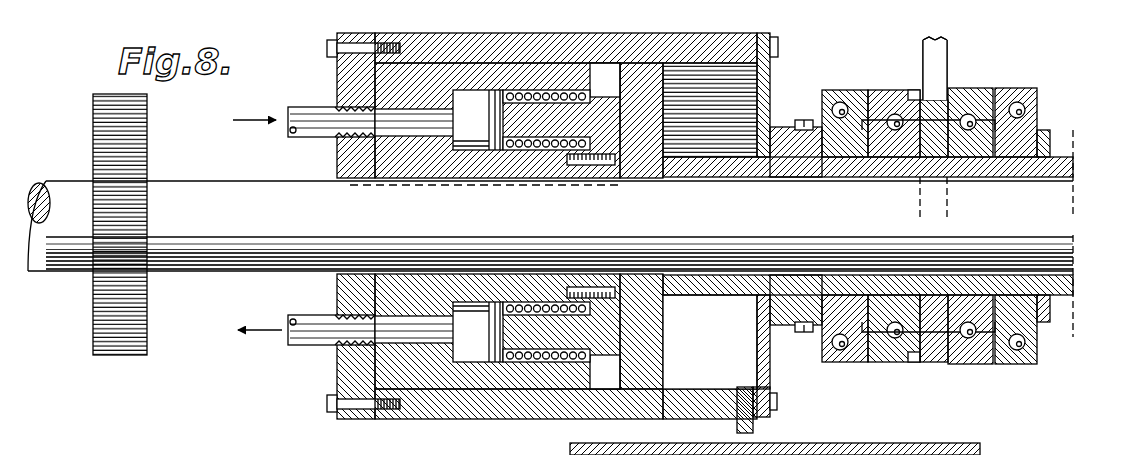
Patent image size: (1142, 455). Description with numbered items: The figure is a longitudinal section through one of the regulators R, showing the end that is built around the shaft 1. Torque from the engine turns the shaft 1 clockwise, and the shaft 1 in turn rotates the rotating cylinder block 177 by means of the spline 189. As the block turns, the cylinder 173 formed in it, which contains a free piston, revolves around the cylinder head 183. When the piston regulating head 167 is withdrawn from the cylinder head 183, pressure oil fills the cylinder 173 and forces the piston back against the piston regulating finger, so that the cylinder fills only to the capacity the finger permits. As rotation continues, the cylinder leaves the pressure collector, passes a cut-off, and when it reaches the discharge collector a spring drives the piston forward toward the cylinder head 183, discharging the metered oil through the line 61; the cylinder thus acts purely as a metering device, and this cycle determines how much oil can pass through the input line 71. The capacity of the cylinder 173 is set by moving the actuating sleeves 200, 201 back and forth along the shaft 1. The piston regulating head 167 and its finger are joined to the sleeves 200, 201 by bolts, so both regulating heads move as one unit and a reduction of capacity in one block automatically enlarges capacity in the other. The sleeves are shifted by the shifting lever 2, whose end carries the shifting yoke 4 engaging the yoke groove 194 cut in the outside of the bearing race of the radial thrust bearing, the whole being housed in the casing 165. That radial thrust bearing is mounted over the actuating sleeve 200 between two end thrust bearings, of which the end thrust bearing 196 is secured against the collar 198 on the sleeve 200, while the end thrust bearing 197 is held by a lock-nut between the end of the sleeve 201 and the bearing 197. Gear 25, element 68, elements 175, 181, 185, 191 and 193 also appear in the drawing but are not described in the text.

The shaft 1 is at (224, 205).
The shifting lever 2 is at (937, 57).
The shifting yoke 4 is at (950, 195).
The gear 25 is at (92, 322).
The discharge line 61 is at (331, 330).
The screw 68 is at (766, 391).
The input line 71 is at (303, 105).
The casing 165 is at (519, 404).
The piston regulating head 167 is at (650, 146).
The cylinder 173 is at (497, 331).
The top plate 175 is at (613, 87).
The rotating cylinder block 177 is at (397, 165).
The rod portion 181 is at (414, 329).
The cylinder head 183 is at (363, 346).
The bolt 185 is at (772, 36).
The spline 189 is at (473, 187).
The screw 191 is at (591, 292).
The plate section 193 is at (710, 404).
The yoke groove 194 is at (912, 98).
The end thrust bearing 196 is at (1032, 92).
The end thrust bearing 197 is at (827, 90).
The collar 198 is at (1047, 133).
The actuating sleeve 200 is at (868, 298).
The actuating sleeve 201 is at (710, 342).
The regulator R is at (392, 421).